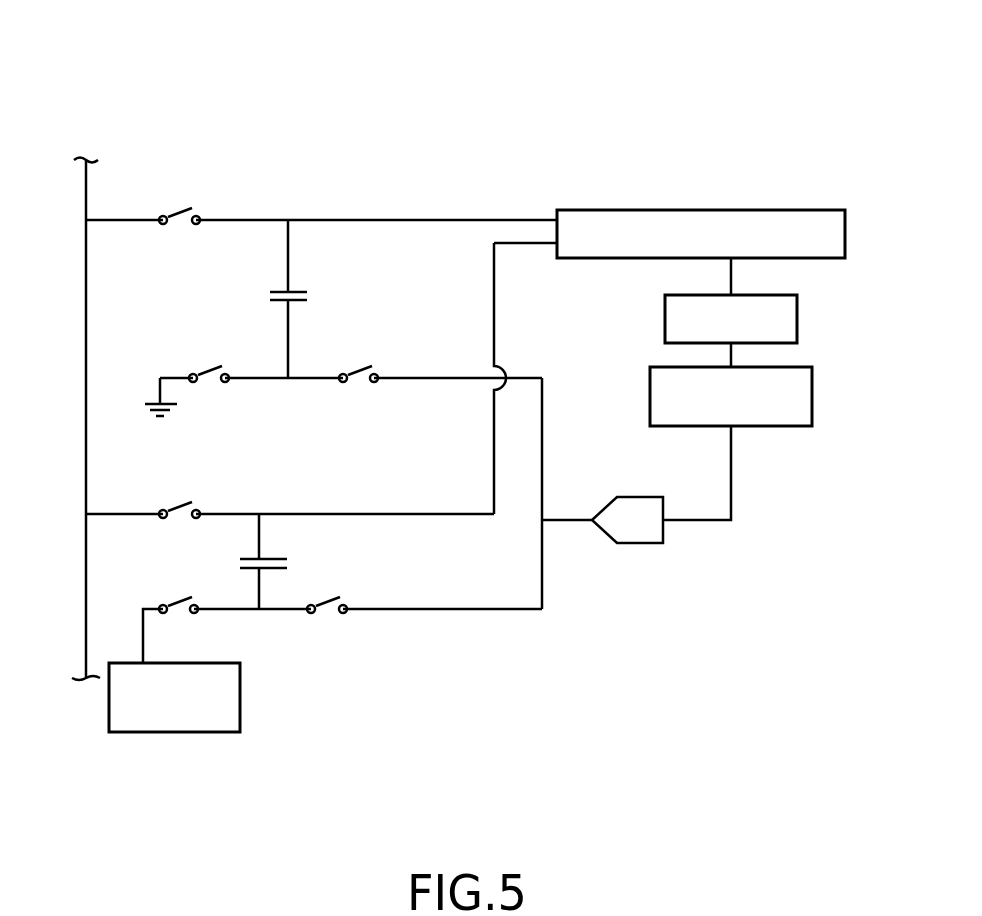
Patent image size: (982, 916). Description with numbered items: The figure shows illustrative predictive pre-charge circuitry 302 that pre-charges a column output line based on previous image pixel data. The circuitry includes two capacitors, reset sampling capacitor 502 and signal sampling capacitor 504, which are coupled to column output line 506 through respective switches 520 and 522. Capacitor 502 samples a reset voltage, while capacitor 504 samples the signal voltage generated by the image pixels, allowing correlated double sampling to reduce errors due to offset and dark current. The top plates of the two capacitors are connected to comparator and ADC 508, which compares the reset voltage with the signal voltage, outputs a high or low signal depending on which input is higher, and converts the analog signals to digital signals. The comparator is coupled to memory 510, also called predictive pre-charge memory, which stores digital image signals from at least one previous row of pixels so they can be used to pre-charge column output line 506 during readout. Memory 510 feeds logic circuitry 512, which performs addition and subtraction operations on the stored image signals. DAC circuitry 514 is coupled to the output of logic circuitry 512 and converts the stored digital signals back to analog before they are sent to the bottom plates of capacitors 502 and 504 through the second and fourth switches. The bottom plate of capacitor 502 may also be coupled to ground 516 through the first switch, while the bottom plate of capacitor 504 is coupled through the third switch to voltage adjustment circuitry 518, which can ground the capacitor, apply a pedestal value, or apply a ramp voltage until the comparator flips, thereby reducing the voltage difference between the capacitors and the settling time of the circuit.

The predictive pre-charge circuitry 302 is at (589, 90).
The C_SHR capacitor 502 is at (270, 296).
The C_SHS capacitor 504 is at (240, 562).
The column output line 506 is at (86, 352).
The comparator and ADC 508 is at (765, 210).
The memory 510 is at (797, 312).
The logic circuitry 512 is at (812, 396).
The DAC circuitry 514 is at (641, 543).
The ground 516 is at (150, 405).
The voltage adjustment circuitry 518 is at (240, 695).
The switch 520 is at (182, 212).
The switch 522 is at (182, 506).